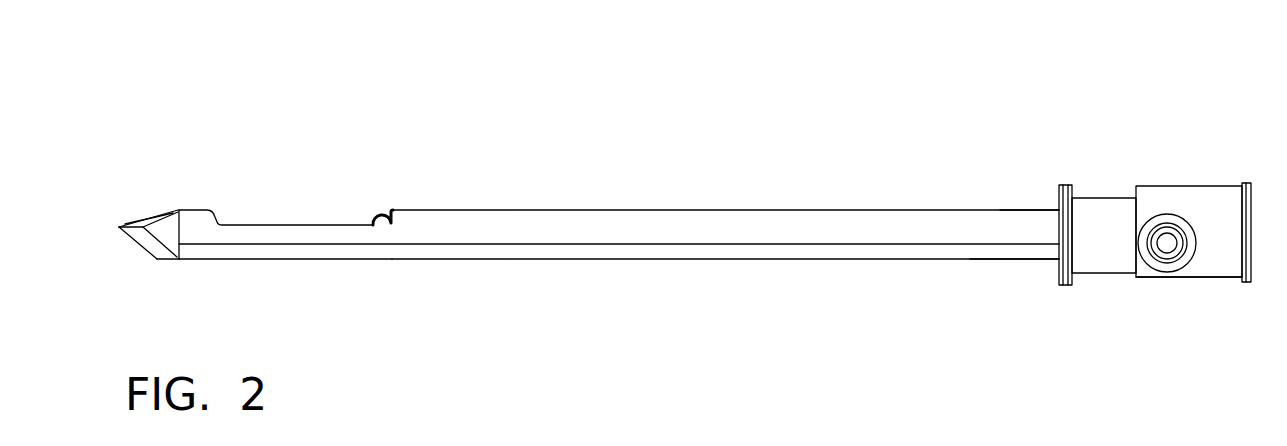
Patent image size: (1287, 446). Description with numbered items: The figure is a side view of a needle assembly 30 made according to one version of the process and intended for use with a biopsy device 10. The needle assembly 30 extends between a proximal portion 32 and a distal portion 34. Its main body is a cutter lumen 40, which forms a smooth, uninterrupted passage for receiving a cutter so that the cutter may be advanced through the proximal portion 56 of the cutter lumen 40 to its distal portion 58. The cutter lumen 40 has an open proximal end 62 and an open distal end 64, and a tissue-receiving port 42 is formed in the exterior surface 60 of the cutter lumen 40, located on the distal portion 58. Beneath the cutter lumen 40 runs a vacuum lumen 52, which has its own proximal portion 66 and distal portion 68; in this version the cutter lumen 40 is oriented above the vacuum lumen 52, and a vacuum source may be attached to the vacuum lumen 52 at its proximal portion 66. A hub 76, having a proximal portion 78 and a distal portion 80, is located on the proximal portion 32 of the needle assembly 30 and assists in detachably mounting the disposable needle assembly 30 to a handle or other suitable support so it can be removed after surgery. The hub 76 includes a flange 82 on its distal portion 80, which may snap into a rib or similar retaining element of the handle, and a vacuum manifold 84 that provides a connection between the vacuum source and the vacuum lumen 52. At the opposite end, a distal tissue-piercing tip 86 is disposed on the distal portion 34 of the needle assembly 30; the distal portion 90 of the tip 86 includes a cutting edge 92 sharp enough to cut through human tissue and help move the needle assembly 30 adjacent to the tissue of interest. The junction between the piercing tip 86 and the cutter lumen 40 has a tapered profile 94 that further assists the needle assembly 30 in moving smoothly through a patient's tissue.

The biopsy device 10 is at (418, 85).
The needle assembly 30 is at (447, 175).
The proximal portion of needle assembly 32 is at (1020, 158).
The distal portion of needle assembly 34 is at (262, 195).
The cutter lumen 40 is at (536, 210).
The tissue-receiving port 42 is at (337, 224).
The vacuum lumen 52 is at (582, 262).
The proximal portion of cutter lumen 56 is at (1018, 207).
The distal portion of cutter lumen 58 is at (190, 208).
The exterior surface of cutter lumen 60 is at (707, 209).
The open proximal end of cutter lumen 62 is at (1254, 262).
The open distal end of cutter lumen 64 is at (171, 262).
The proximal portion of vacuum lumen 66 is at (990, 262).
The distal portion of vacuum lumen 68 is at (232, 262).
The hub 76 is at (1170, 185).
The proximal portion of hub 78 is at (1230, 279).
The distal portion of hub 80 is at (1095, 276).
The flange 82 is at (1069, 184).
The vacuum manifold 84 is at (1173, 270).
The distal tissue-piercing tip 86 is at (160, 205).
The distal portion of tissue-piercing tip 90 is at (135, 255).
The cutting edge 92 is at (140, 222).
The tapered profile 94 is at (176, 210).